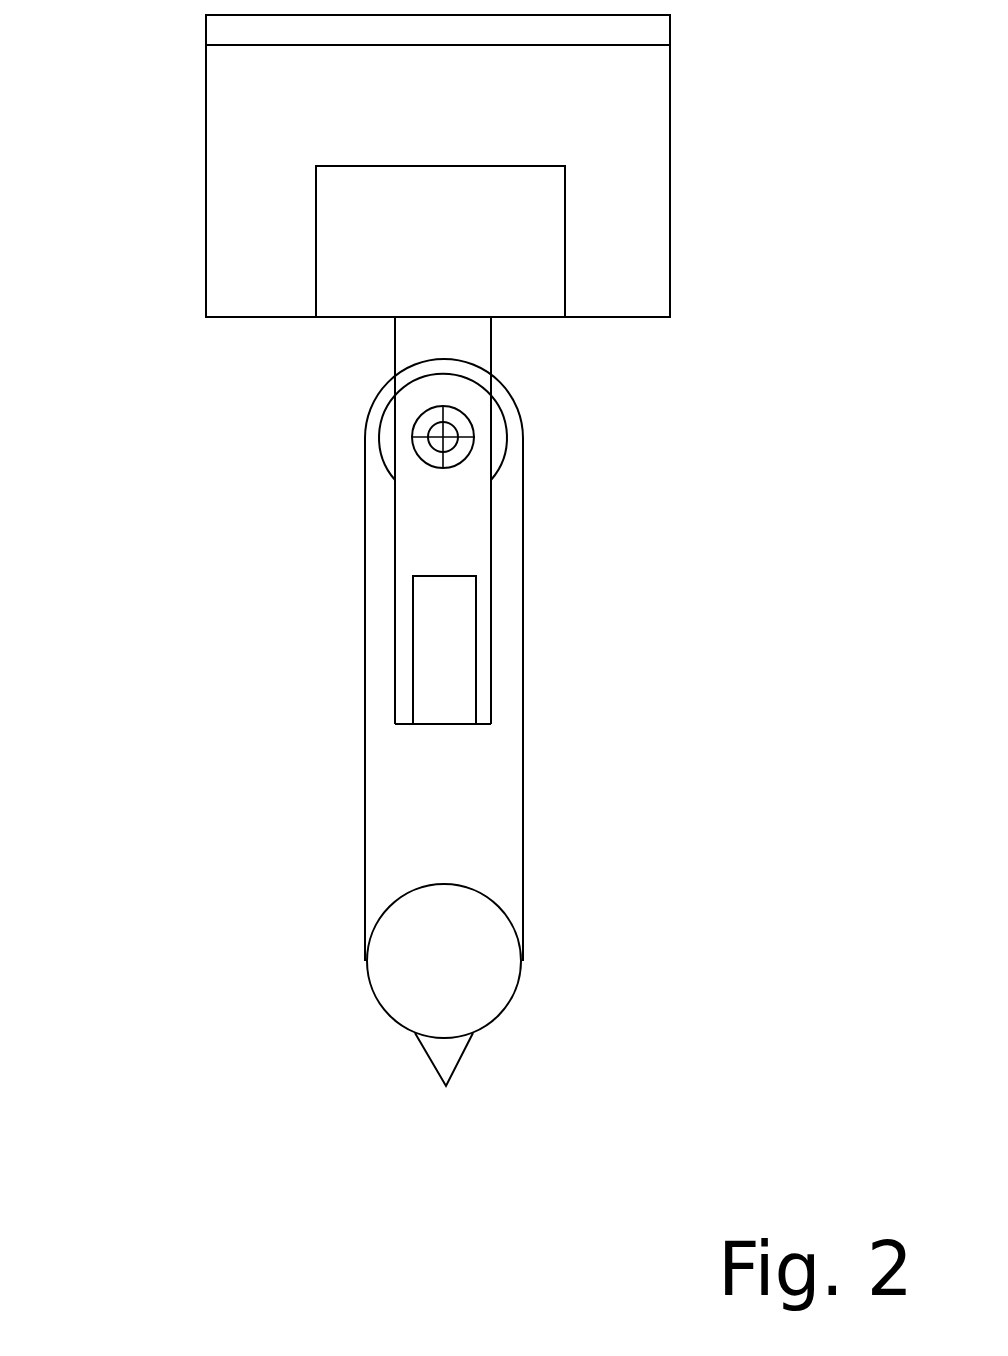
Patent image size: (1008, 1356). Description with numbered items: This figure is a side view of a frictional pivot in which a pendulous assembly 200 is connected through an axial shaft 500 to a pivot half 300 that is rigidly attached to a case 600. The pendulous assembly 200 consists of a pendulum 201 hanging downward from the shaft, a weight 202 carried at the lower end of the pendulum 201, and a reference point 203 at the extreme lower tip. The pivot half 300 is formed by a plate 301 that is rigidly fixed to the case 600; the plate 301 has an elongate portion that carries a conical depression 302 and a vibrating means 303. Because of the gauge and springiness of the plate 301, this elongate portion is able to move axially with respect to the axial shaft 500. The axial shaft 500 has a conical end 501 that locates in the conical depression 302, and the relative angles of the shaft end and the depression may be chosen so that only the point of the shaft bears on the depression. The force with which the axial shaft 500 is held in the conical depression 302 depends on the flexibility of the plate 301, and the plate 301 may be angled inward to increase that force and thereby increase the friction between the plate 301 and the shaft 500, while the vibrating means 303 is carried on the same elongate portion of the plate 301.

The case 600 is at (349, 166).
The plate 301 is at (300, 245).
The pivot half 300 is at (411, 546).
The conical depression 302 is at (293, 468).
The vibrating means 303 is at (274, 675).
The axial shaft 500 is at (589, 481).
The conical end 501 is at (578, 429).
The pendulous assembly 200 is at (387, 754).
The pendulum 201 is at (554, 660).
The weight 202 is at (557, 961).
The reference point 203 is at (556, 1091).